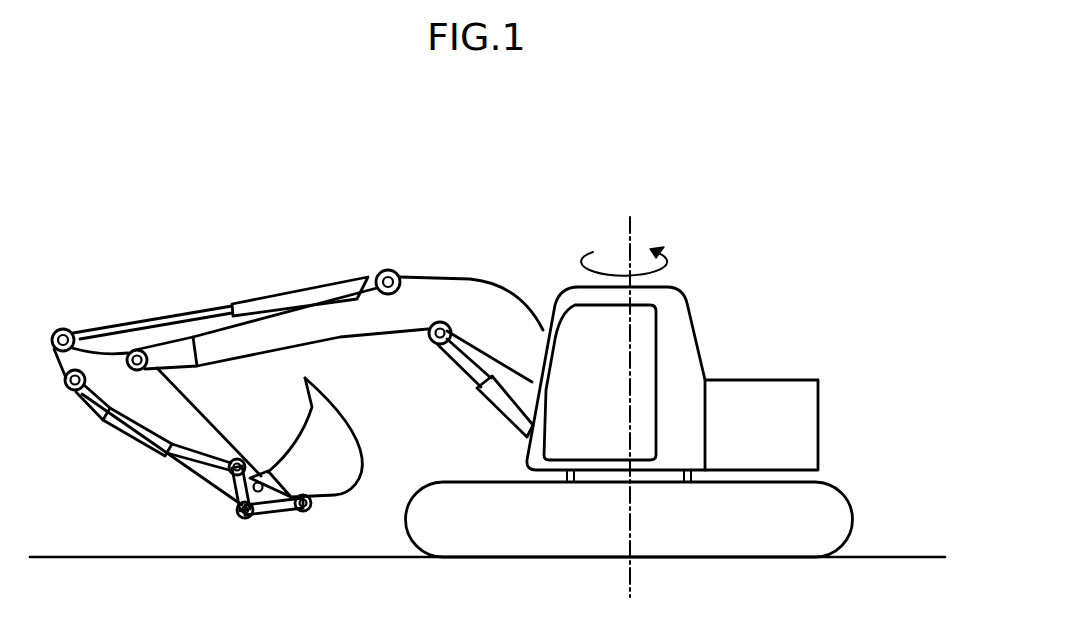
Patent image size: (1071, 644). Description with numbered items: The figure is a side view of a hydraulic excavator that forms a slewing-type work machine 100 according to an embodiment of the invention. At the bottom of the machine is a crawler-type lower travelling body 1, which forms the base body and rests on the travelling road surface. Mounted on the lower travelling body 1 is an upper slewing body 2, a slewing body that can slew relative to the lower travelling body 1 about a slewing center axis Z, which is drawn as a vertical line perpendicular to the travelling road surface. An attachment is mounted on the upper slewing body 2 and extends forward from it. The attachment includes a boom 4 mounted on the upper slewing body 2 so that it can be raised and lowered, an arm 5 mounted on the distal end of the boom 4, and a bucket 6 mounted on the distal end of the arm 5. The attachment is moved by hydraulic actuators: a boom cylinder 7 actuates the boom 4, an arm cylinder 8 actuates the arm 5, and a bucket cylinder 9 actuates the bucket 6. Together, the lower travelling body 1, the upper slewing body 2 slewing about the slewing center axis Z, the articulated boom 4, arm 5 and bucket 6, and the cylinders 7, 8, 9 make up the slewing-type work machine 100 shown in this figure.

The slewing-type work machine 100 is at (374, 202).
The lower travelling body 1 is at (733, 558).
The upper slewing body 2 is at (684, 285).
The boom 4 is at (472, 280).
The arm 5 is at (107, 414).
The bucket 6 is at (338, 416).
The boom cylinder 7 is at (487, 388).
The arm cylinder 8 is at (277, 296).
The bucket cylinder 9 is at (140, 443).
The slewing center axis Z is at (628, 233).